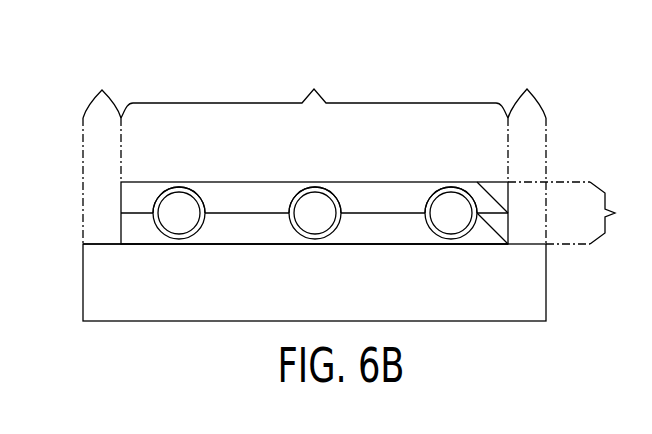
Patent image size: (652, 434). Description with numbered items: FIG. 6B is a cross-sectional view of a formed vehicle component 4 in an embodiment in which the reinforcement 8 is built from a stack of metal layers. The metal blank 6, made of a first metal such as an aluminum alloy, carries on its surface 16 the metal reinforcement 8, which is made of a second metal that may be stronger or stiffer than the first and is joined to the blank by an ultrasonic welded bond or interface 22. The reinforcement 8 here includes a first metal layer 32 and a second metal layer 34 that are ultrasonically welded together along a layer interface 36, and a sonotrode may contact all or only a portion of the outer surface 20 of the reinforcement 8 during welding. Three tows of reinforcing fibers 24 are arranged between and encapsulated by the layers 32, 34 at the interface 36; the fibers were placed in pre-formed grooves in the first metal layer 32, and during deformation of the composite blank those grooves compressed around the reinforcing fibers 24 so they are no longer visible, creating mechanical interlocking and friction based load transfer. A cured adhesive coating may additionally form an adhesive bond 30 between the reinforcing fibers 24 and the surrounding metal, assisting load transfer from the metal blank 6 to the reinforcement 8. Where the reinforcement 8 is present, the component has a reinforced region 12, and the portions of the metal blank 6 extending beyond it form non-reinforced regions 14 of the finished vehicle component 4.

The vehicle component 4 is at (500, 46).
The metal blank 6 is at (112, 302).
The reinforcement 8 is at (612, 213).
The reinforced region 12 is at (314, 88).
The non-reinforced region 14 is at (314, 88).
The surface of the metal blank 16 is at (107, 243).
The surface of the reinforcement 20 is at (257, 181).
The ultrasonic welded bond/interface 22 is at (246, 247).
The reinforcing fibers 24 is at (178, 213).
The adhesive bond 30 is at (161, 196).
The first metal layer 32 is at (492, 228).
The second metal layer 34 is at (487, 200).
The interface line 36 is at (240, 211).